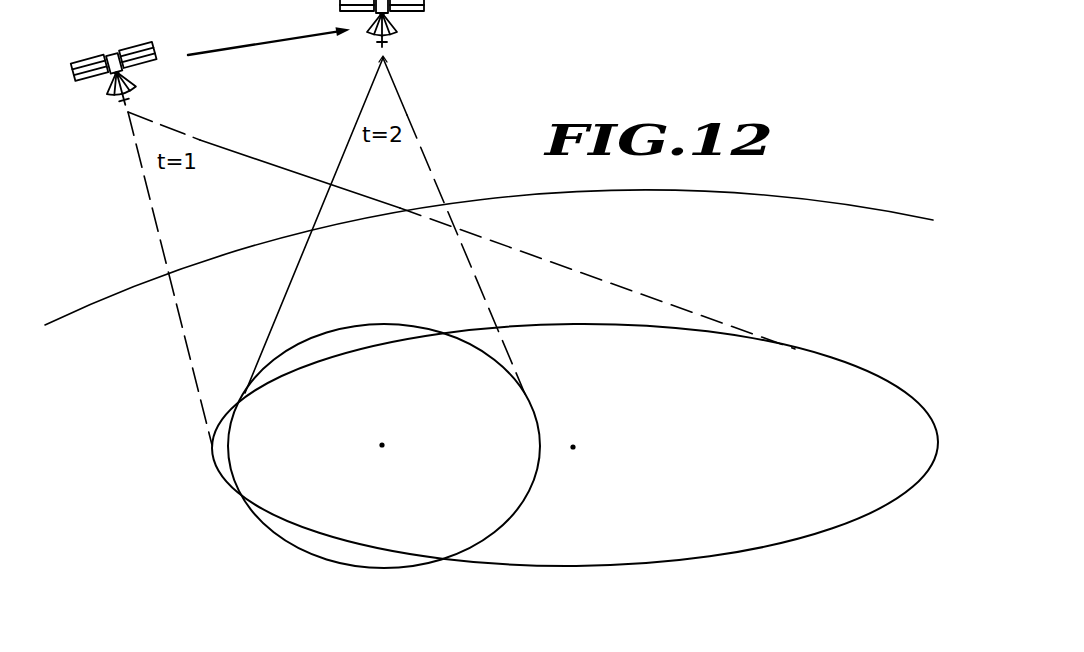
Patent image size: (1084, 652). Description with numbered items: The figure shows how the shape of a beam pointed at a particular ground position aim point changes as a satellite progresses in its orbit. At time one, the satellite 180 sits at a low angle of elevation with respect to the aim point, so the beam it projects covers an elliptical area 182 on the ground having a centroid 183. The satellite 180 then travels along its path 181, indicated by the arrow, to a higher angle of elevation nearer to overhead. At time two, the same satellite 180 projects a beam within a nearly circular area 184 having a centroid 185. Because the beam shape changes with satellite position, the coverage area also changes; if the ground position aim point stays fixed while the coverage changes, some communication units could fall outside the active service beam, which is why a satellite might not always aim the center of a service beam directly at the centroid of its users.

The satellite 180 is at (139, 72).
The path 181 is at (264, 40).
The elliptical area 182 is at (813, 539).
The centroid 183 is at (575, 448).
The circular area 184 is at (283, 539).
The centroid 185 is at (384, 446).